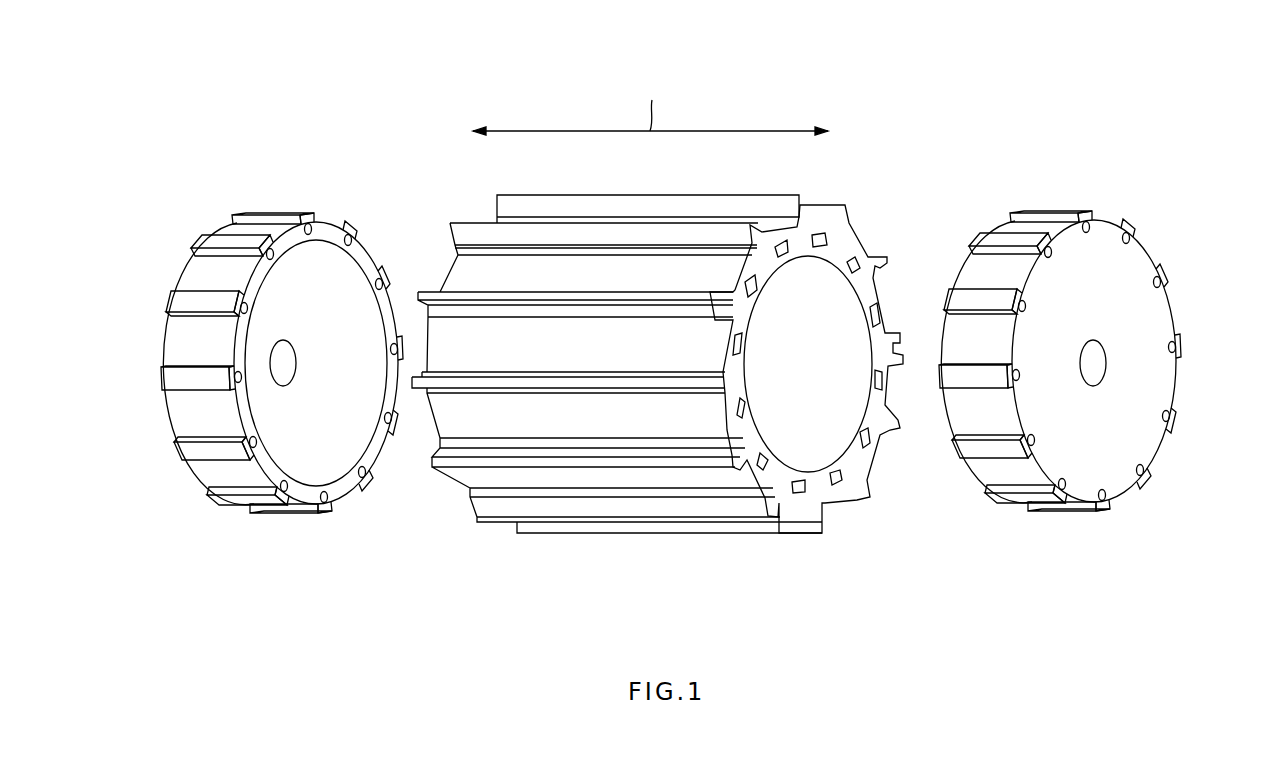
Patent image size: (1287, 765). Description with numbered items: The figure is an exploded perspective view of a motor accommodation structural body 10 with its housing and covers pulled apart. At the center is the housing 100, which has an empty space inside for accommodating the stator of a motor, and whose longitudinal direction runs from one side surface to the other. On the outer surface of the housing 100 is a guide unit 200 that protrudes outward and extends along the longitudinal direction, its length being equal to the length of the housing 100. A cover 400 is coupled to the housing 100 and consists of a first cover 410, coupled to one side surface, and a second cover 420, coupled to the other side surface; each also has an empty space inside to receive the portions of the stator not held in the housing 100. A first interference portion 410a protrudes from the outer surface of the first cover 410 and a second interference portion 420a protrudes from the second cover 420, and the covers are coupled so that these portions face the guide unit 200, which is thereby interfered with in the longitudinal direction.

The structural body 10 is at (333, 63).
The housing 100 is at (872, 176).
The guide unit 200 is at (655, 522).
The cover 400 is at (1128, 63).
The first cover 410 is at (1160, 314).
The second cover 420 is at (308, 270).
The first interference portion 410a is at (972, 453).
The second interference portion 420a is at (195, 452).